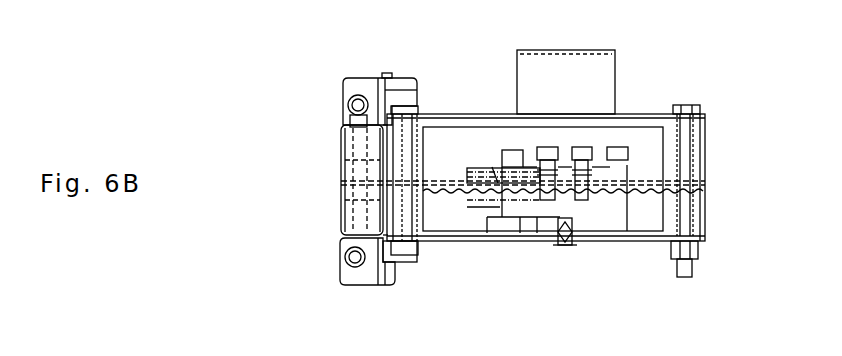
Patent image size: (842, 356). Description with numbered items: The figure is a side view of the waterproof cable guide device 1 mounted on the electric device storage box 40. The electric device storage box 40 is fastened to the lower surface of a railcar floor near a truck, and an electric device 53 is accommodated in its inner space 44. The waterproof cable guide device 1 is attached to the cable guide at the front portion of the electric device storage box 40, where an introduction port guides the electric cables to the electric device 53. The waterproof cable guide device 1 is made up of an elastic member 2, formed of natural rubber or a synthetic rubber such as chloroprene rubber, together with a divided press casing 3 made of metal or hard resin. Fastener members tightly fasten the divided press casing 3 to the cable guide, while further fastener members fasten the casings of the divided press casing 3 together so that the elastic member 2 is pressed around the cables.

The waterproof cable guide device 1 is at (330, 157).
The elastic member 2 is at (343, 213).
The divided press casing 3 is at (340, 128).
The electric device storage box 40 is at (473, 106).
The inner space 44 is at (637, 137).
The electric device 53 is at (608, 207).